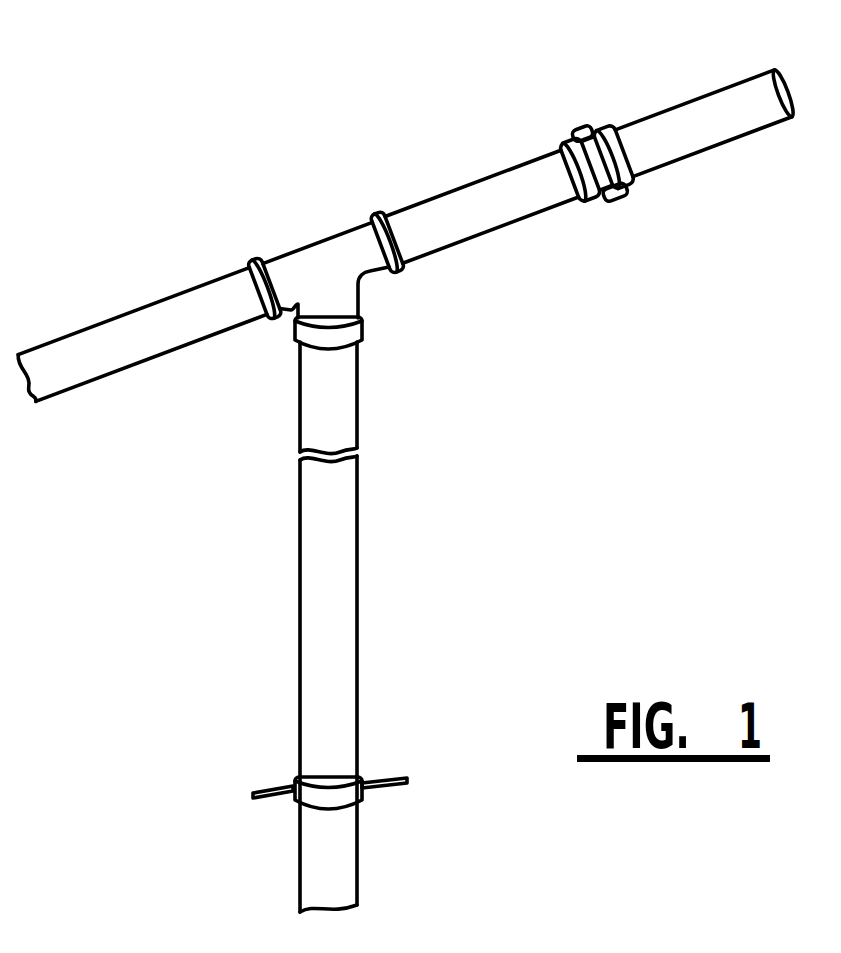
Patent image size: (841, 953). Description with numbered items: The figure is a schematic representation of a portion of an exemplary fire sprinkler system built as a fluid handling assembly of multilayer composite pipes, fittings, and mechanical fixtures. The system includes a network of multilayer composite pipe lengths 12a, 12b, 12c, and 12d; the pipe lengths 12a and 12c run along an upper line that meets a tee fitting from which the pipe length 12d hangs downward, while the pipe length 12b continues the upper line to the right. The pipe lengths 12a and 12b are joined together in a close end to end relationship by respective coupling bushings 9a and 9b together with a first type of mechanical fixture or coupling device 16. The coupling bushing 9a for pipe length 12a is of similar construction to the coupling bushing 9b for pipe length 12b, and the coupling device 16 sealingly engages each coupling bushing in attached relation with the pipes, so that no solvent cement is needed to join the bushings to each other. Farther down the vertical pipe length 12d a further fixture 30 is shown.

The coupling bushing 9a is at (568, 147).
The coupling bushing 9b is at (612, 128).
The multilayer composite pipe length 12a is at (427, 222).
The multilayer composite pipe length 12b is at (673, 133).
The multilayer composite pipe length 12c is at (86, 358).
The multilayer composite pipe length 12d is at (340, 633).
The coupling device 16 is at (619, 157).
The collar with cross rod 30 is at (396, 831).